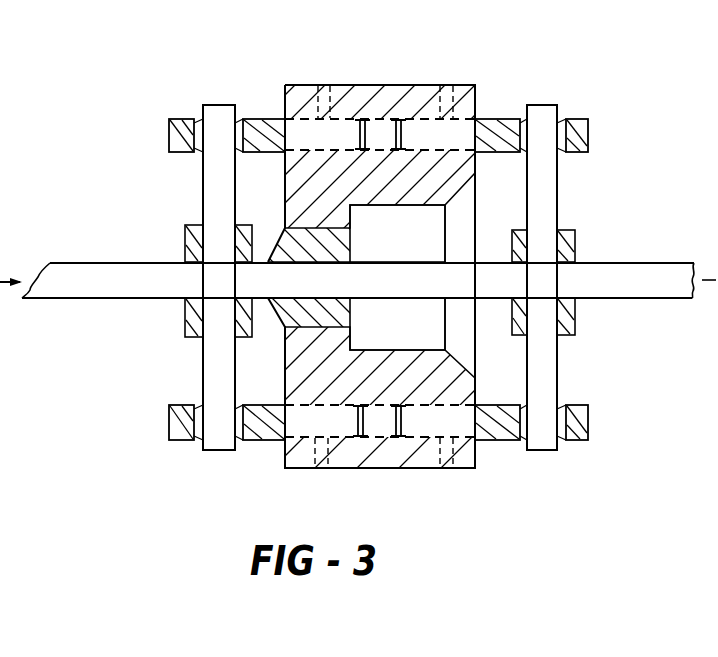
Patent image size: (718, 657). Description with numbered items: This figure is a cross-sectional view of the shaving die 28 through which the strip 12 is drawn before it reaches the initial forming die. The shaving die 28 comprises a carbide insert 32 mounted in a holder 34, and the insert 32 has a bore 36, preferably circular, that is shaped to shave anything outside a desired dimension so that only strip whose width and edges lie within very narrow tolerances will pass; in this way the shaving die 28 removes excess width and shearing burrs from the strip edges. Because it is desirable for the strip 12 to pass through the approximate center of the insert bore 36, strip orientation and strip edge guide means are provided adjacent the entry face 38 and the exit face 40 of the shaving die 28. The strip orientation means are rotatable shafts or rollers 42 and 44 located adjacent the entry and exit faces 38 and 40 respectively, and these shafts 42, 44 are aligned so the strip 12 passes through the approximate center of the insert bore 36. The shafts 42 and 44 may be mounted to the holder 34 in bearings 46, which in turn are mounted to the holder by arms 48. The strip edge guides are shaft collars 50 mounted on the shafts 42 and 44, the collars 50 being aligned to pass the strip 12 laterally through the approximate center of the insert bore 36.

The strip 12 is at (643, 268).
The shaving die 28 is at (284, 58).
The carbide insert 32 is at (273, 310).
The holder 34 is at (368, 91).
The bore 36 is at (358, 255).
The entry face 38 is at (286, 188).
The exit face 40 is at (476, 158).
The rotatable shaft 42 is at (203, 171).
The rotatable shaft 44 is at (550, 212).
The bearing 46 is at (525, 118).
The arm 48 is at (577, 119).
The shaft collar 50 is at (185, 240).